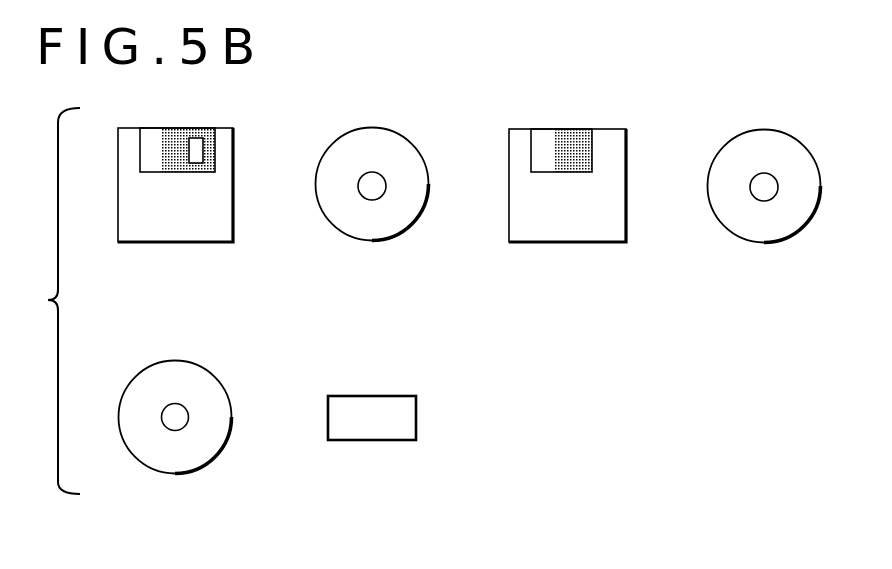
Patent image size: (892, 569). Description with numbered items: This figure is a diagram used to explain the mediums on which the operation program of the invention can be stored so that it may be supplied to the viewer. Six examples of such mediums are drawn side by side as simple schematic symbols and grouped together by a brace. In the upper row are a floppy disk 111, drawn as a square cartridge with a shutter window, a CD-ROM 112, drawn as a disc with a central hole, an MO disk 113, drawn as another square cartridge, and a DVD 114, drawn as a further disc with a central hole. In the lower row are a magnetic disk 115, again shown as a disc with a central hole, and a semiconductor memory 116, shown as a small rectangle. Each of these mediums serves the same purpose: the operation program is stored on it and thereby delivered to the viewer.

The floppy disk 111 is at (165, 243).
The CD-ROM 112 is at (363, 242).
The MO disk 113 is at (560, 243).
The DVD 114 is at (754, 243).
The magnetic disk 115 is at (167, 475).
The semiconductor memory 116 is at (363, 441).